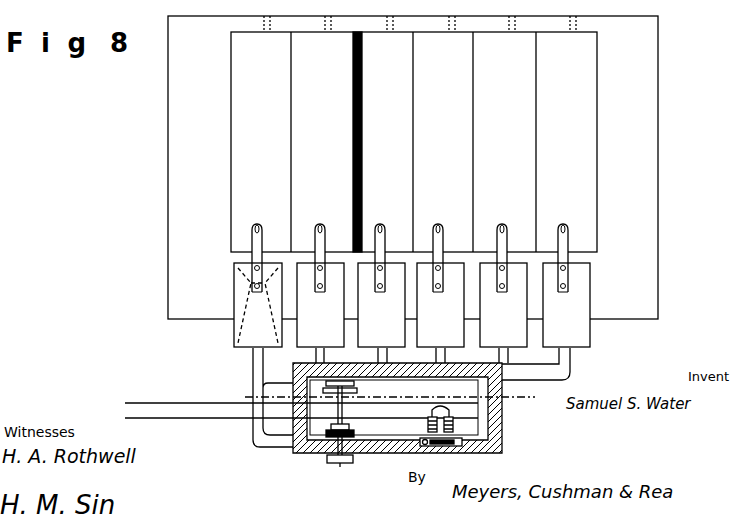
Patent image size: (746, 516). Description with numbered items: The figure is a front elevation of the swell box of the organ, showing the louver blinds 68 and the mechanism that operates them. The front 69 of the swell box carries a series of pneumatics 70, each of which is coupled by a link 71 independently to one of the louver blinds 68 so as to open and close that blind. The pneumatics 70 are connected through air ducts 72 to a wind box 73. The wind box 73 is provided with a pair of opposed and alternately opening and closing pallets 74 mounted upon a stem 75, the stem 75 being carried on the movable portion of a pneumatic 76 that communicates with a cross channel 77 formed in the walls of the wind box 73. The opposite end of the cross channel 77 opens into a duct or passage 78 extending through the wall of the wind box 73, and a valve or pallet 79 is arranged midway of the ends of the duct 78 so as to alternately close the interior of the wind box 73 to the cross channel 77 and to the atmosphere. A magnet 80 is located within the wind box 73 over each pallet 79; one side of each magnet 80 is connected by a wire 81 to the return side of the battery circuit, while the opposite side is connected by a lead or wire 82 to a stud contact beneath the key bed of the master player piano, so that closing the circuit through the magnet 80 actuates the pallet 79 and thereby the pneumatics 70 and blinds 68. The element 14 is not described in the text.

The rail 14 is at (389, 397).
The louver blinds 68 is at (414, 142).
The front 69 is at (658, 194).
The pneumatics 70 is at (412, 305).
The links 71 is at (252, 228).
The air ducts 72 is at (260, 378).
The wind box 73 is at (502, 419).
The pallets 74 is at (353, 462).
The stem 75 is at (345, 414).
The pneumatic 76 is at (351, 357).
The cross channel 77 is at (456, 356).
The duct 78 is at (448, 447).
The valve or pallet 79 is at (432, 448).
The magnet 80 is at (453, 422).
The wire 81 is at (301, 392).
The leads or wires 82 is at (301, 431).